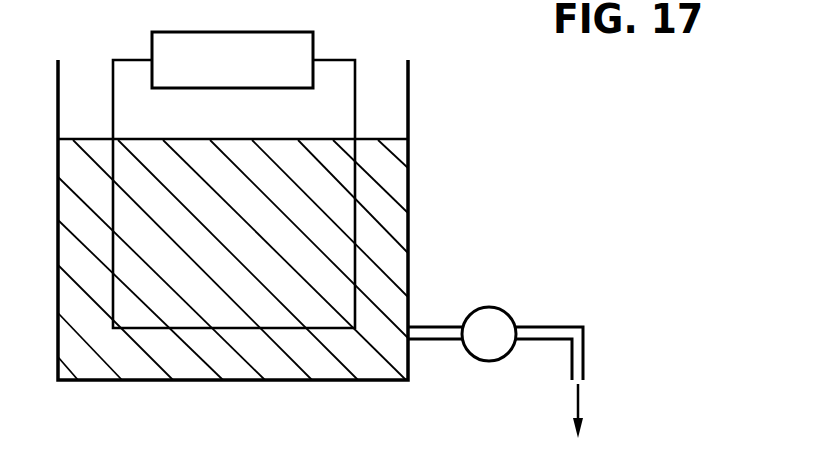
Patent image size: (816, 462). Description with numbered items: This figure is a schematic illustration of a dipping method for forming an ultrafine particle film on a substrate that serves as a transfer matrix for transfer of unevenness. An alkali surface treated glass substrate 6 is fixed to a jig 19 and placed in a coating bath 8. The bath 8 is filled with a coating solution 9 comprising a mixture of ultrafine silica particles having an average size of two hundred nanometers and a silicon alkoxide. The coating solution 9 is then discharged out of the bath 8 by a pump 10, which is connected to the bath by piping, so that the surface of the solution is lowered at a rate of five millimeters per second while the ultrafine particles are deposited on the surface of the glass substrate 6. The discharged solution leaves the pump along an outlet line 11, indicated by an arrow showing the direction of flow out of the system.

The glass substrate 6 is at (125, 60).
The coating bath 8 is at (410, 93).
The coating solution 9 is at (400, 213).
The pump 10 is at (489, 307).
The outlet flow 11 is at (580, 412).
The jig 19 is at (238, 88).